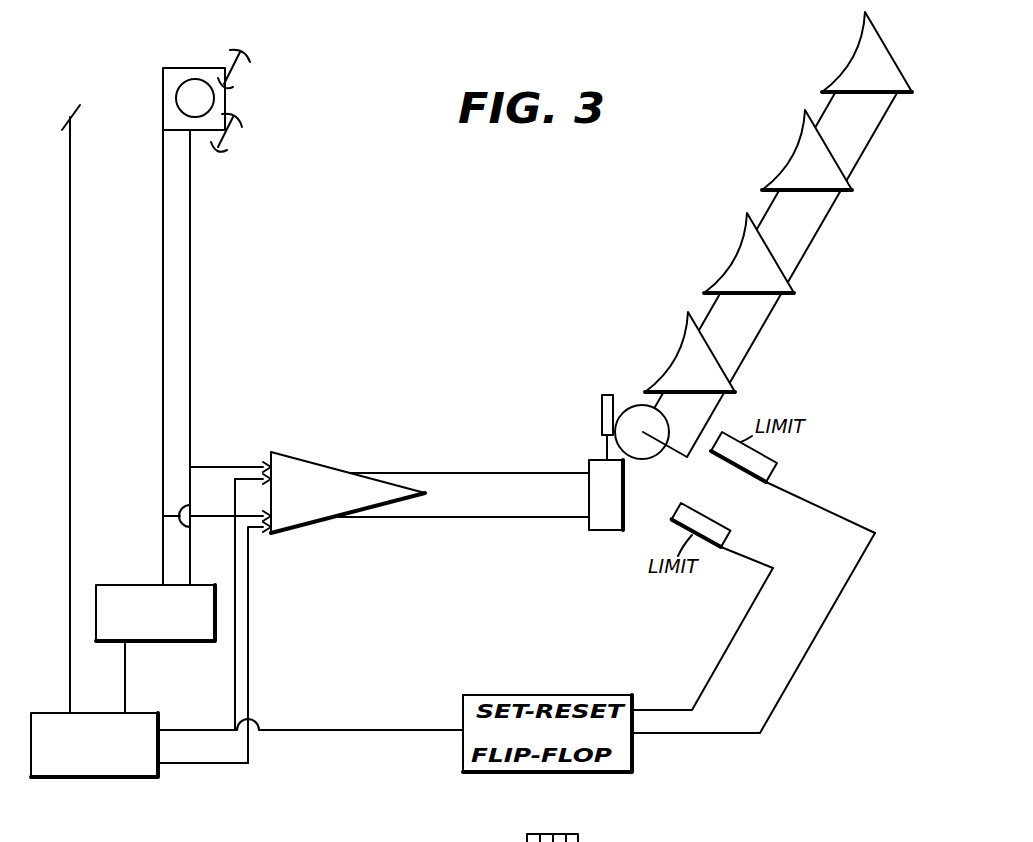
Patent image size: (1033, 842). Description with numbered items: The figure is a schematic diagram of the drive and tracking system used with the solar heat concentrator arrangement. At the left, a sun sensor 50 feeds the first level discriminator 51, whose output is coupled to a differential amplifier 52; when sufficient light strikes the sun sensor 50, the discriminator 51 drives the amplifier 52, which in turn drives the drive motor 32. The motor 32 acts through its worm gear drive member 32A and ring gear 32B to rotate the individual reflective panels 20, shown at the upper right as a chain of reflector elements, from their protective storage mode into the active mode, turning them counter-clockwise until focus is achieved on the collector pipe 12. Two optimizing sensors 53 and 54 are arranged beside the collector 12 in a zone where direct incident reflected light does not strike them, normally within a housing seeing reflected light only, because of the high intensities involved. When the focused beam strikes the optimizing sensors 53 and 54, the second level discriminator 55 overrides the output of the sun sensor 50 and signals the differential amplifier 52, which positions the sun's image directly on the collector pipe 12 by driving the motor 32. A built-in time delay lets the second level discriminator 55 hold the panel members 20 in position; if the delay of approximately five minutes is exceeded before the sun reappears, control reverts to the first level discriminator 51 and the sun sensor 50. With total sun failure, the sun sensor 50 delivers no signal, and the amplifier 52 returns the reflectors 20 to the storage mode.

The collector pipe 12 is at (189, 57).
The reflective panels 20 is at (903, 47).
The drive motor 32 is at (607, 531).
The worm gear drive member 32A is at (600, 417).
The ring gear 32B is at (632, 403).
The sun sensor 50 is at (75, 103).
The No. 1 level discriminator 51 is at (82, 782).
The differential amplifier 52 is at (312, 524).
The optimizing sensor 53 is at (248, 62).
The optimizing sensor 54 is at (222, 148).
The No. 2 level discriminator 55 is at (136, 583).